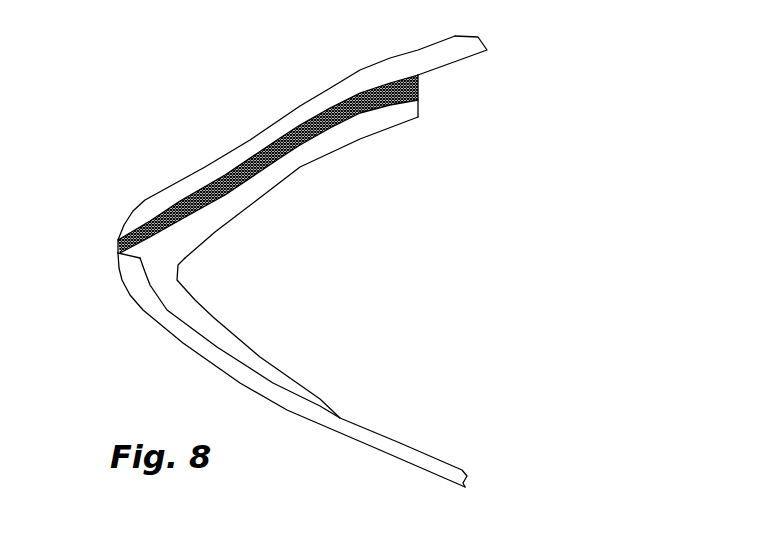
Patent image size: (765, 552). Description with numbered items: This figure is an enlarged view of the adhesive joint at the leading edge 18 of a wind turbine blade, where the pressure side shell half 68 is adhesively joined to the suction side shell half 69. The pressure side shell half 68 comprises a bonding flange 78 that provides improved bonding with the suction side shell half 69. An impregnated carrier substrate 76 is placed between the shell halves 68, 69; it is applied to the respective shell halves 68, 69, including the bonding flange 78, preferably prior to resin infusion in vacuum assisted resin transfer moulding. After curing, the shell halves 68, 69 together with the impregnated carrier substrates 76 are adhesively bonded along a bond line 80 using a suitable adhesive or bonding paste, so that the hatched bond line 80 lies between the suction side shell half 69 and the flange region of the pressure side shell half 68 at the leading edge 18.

The leading edge 18 is at (118, 247).
The pressure side shell half 68 is at (162, 316).
The suction side shell half 69 is at (177, 190).
The impregnated carrier substrate 76 is at (276, 142).
The bonding flange 78 is at (215, 328).
The bond line 80 is at (419, 90).